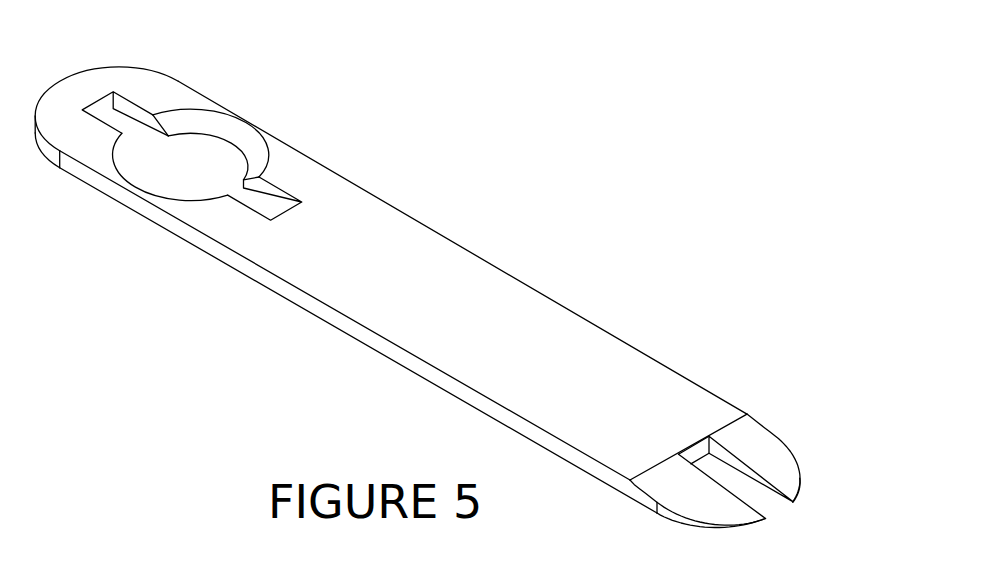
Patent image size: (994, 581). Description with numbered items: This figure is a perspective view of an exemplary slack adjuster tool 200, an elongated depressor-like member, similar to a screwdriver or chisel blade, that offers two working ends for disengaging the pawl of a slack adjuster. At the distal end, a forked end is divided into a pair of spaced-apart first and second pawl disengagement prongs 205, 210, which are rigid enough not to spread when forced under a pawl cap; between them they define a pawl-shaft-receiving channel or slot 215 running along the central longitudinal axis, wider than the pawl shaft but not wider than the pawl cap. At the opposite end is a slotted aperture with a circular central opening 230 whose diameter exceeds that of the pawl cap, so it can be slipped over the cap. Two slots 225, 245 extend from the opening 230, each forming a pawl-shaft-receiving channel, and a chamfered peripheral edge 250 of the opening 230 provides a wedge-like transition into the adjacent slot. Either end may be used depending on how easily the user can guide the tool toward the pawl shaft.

The slack adjuster tool 200 is at (441, 270).
The first pawl disengagement prong 205 is at (787, 464).
The second pawl disengagement prong 210 is at (727, 508).
The pawl-shaft-receiving channel 215 is at (733, 480).
The slot 225 is at (267, 210).
The central opening 230 is at (213, 167).
The slot 245 is at (130, 133).
The chamfered peripheral edge 250 is at (247, 140).